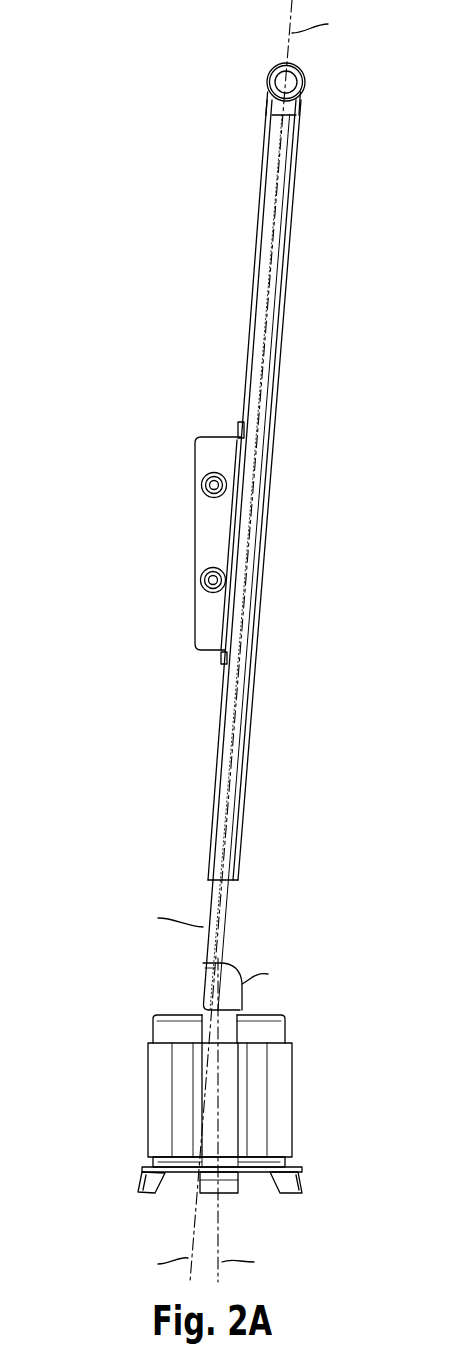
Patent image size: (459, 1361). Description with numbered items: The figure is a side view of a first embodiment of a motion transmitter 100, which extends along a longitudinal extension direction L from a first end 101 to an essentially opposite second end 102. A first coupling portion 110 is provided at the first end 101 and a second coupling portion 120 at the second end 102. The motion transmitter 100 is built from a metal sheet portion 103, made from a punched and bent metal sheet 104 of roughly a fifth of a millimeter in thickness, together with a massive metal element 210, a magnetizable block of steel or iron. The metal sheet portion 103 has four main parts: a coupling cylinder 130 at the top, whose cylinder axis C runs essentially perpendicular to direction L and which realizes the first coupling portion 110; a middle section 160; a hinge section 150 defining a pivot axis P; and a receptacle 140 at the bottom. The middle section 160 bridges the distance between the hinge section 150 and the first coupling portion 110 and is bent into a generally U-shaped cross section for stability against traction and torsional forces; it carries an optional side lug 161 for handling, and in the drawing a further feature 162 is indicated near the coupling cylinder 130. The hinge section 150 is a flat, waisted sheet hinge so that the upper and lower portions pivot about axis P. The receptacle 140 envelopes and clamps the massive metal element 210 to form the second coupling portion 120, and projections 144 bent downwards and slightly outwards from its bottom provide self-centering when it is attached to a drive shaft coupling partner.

The motion transmitter 100 is at (97, 395).
The first coupling portion 110 is at (236, 95).
The second coupling portion 120 is at (120, 1084).
The coupling cylinder 130 is at (318, 80).
The first end 101 is at (318, 100).
The second end 102 is at (320, 1160).
The metal sheet portion 103 is at (298, 424).
The punched and bent metal sheet 104 is at (279, 333).
The receptacle 140 is at (310, 1043).
The projections 144 is at (287, 1184).
The hinge section 150 is at (235, 926).
The middle section 160 is at (270, 718).
The side lug 161 is at (212, 537).
The end cap 162 is at (252, 115).
The massive metal element 210 is at (270, 1028).